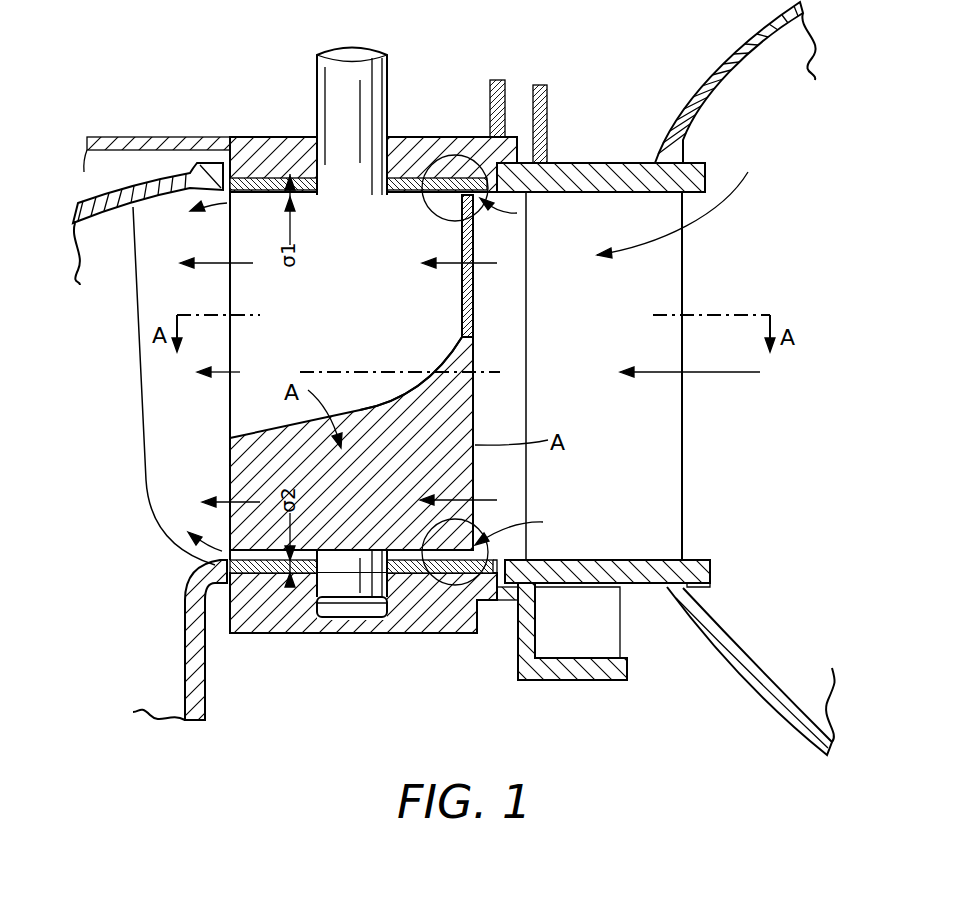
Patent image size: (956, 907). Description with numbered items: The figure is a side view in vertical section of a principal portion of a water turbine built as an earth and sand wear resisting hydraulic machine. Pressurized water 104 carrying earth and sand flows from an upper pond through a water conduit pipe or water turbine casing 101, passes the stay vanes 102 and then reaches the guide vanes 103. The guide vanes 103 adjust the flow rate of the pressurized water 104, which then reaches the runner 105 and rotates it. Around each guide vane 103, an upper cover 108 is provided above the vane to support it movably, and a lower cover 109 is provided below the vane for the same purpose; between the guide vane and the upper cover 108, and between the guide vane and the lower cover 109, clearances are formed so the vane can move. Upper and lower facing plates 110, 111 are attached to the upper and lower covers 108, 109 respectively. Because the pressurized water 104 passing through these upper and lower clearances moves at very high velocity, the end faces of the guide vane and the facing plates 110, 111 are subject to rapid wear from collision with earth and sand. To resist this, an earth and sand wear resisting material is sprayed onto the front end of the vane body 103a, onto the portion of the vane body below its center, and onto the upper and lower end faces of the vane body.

The water turbine casing 101 is at (745, 66).
The stay vanes 102 is at (685, 283).
The guide vane 103 is at (480, 237).
The vane body 103a is at (474, 304).
The pressurized water 104 is at (722, 207).
The runner 105 is at (150, 447).
The upper cover 108 is at (270, 135).
The lower cover 109 is at (302, 634).
The upper facing plate 110 is at (400, 192).
The lower facing plate 111 is at (403, 575).